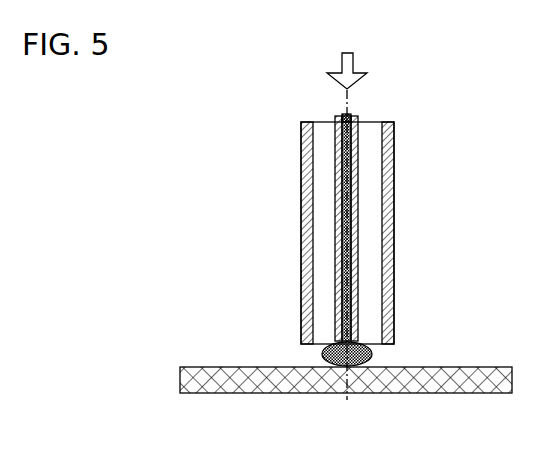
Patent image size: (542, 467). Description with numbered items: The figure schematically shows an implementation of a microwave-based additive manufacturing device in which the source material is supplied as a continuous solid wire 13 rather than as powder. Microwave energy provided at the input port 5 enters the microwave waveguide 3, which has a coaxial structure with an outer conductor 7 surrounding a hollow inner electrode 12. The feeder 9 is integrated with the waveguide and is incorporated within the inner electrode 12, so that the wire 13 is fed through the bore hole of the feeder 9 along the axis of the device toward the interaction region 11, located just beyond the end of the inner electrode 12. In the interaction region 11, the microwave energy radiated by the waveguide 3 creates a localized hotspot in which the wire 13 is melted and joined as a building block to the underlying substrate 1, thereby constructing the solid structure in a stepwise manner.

The substrate 1 is at (284, 397).
The microwave waveguide 3 is at (365, 226).
The input port 5 is at (365, 58).
The outer conductor 7 is at (300, 217).
The feeder 9 is at (350, 204).
The interaction region 11 is at (321, 358).
The inner electrode 12 is at (360, 232).
The wire 13 is at (353, 114).